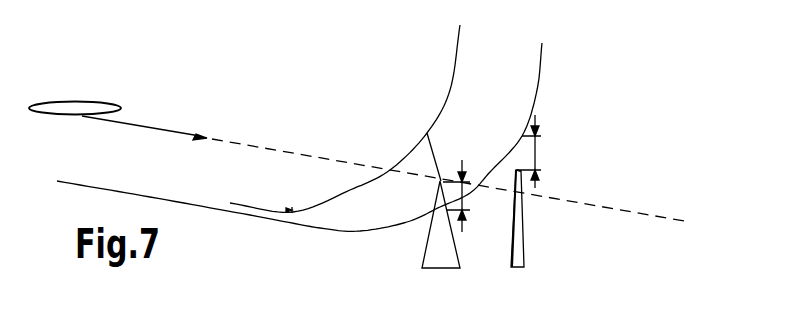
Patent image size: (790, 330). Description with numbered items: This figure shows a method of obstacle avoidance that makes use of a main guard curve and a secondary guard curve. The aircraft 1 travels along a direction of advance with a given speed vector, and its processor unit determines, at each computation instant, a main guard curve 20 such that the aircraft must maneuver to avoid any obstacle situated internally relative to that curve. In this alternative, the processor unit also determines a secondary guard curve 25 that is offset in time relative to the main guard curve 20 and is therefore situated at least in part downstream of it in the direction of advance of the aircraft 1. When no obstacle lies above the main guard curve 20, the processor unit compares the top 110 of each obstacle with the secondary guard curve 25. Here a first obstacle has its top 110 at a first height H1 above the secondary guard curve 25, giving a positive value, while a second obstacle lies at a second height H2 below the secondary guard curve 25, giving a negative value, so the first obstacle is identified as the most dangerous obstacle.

The aircraft 1 is at (90, 101).
The main guard curve 20 is at (460, 42).
The secondary guard curve 25 is at (541, 70).
The top of obstacle 110 is at (440, 180).
The first height H1 is at (470, 206).
The second height H2 is at (538, 141).